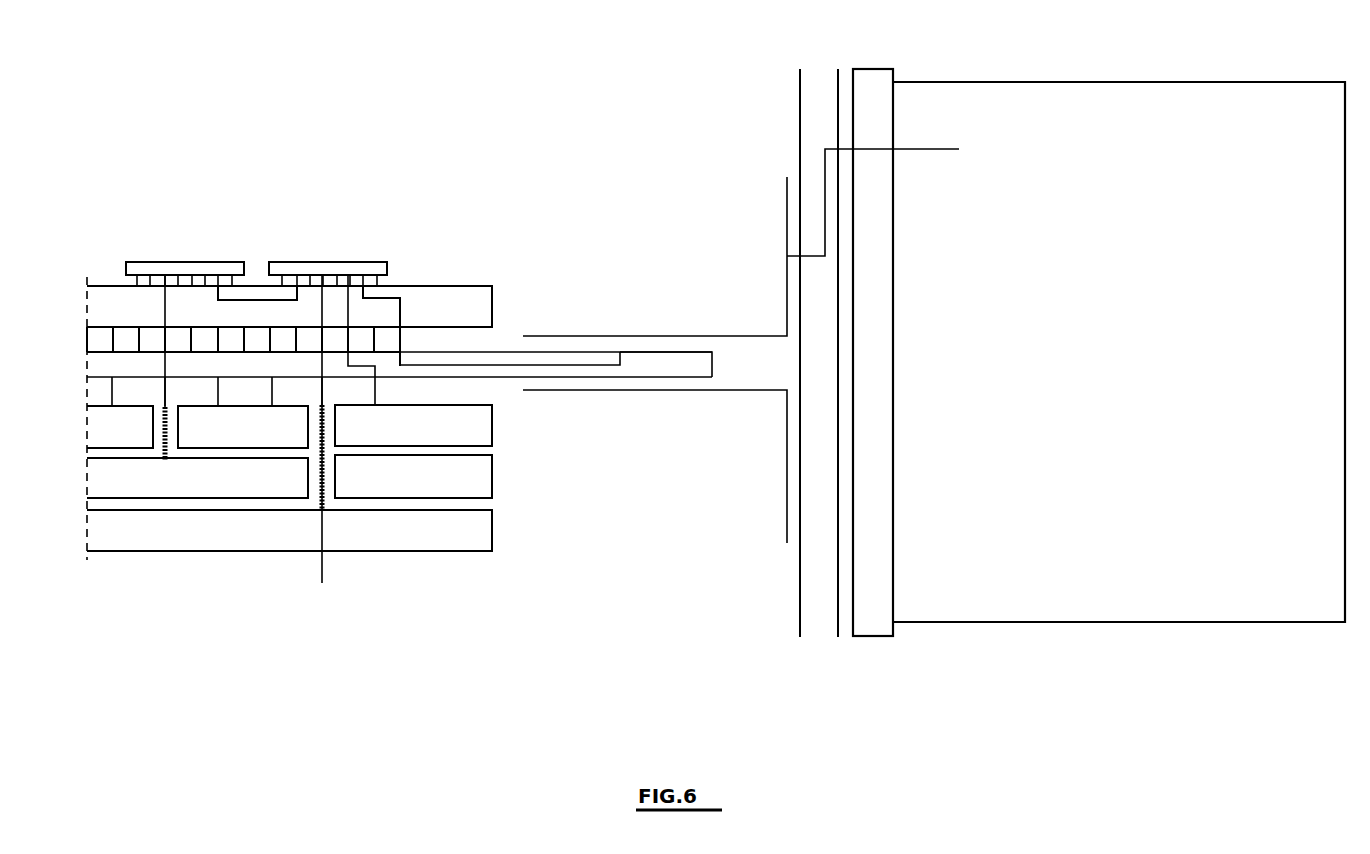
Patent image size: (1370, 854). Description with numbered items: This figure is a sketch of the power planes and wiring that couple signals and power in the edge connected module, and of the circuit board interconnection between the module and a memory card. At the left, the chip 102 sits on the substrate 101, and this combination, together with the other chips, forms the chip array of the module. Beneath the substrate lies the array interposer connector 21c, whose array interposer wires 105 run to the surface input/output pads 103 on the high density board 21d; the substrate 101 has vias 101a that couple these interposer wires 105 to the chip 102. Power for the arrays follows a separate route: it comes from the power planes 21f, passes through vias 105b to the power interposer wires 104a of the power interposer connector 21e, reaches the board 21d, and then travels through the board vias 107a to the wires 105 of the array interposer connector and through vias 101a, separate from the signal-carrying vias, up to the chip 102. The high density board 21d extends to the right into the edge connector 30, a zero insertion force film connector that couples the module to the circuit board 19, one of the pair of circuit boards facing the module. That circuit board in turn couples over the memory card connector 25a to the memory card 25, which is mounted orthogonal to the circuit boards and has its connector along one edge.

The substrate 101 is at (481, 305).
The vias 101a is at (158, 290).
The chip 102 is at (176, 264).
The surface input/output pads 103 is at (620, 350).
The power interposer wires 104a is at (323, 390).
The array interposer wires 105 is at (265, 337).
The vias 105b is at (165, 460).
The board vias 107a is at (322, 367).
The array interposer connector 21c is at (108, 347).
The high density board 21d is at (687, 355).
The power interposer connector 21e is at (112, 407).
The power planes 21f is at (453, 445).
The edge connector 30 is at (720, 390).
The circuit board 19 is at (822, 628).
The memory card 25 is at (1153, 605).
The memory card connector 25a is at (867, 80).